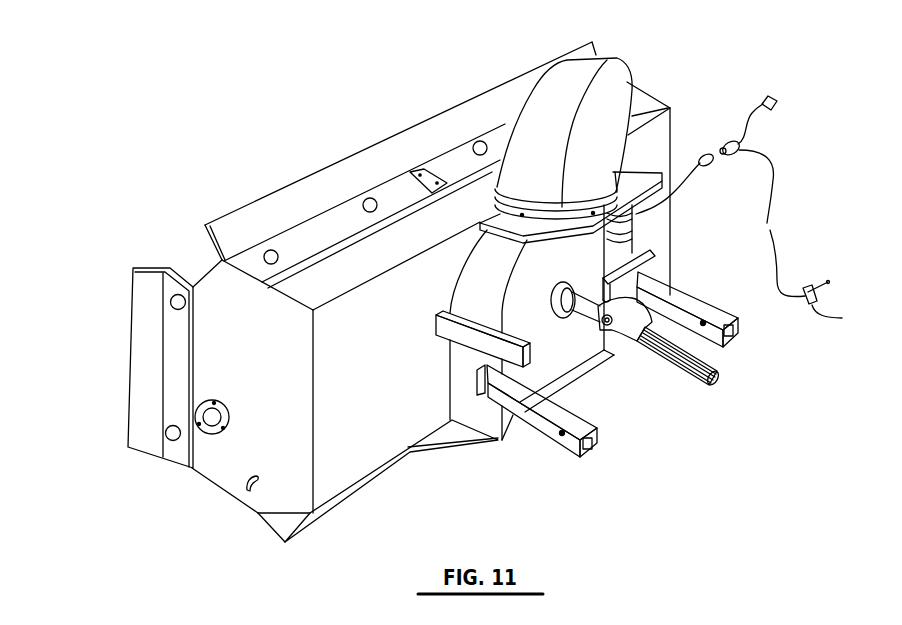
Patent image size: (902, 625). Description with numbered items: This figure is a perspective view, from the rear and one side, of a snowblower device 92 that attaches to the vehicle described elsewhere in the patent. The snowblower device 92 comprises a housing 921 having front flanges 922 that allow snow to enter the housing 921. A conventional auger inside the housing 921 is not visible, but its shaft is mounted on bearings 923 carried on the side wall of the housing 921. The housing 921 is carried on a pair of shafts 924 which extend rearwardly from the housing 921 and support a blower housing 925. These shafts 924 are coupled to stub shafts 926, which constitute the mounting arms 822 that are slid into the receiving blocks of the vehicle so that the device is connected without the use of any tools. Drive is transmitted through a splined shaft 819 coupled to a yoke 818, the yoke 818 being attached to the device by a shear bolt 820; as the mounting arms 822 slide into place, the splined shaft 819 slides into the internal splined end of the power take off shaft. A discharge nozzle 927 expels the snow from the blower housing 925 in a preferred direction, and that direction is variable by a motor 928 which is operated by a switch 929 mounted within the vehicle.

The snowblower device 92 is at (358, 446).
The housing 921 is at (232, 468).
The front flanges 922 is at (142, 346).
The bearings 923 is at (222, 408).
The shafts 924 is at (455, 333).
The blower housing 925 is at (560, 365).
The stub shafts 926 is at (609, 422).
The mounting arms 822 is at (593, 443).
The discharge nozzle 927 is at (623, 78).
The motor 928 is at (628, 243).
The switch 929 is at (765, 213).
The yoke 818 is at (595, 327).
The splined shaft 819 is at (717, 373).
The shear bolt 820 is at (580, 298).